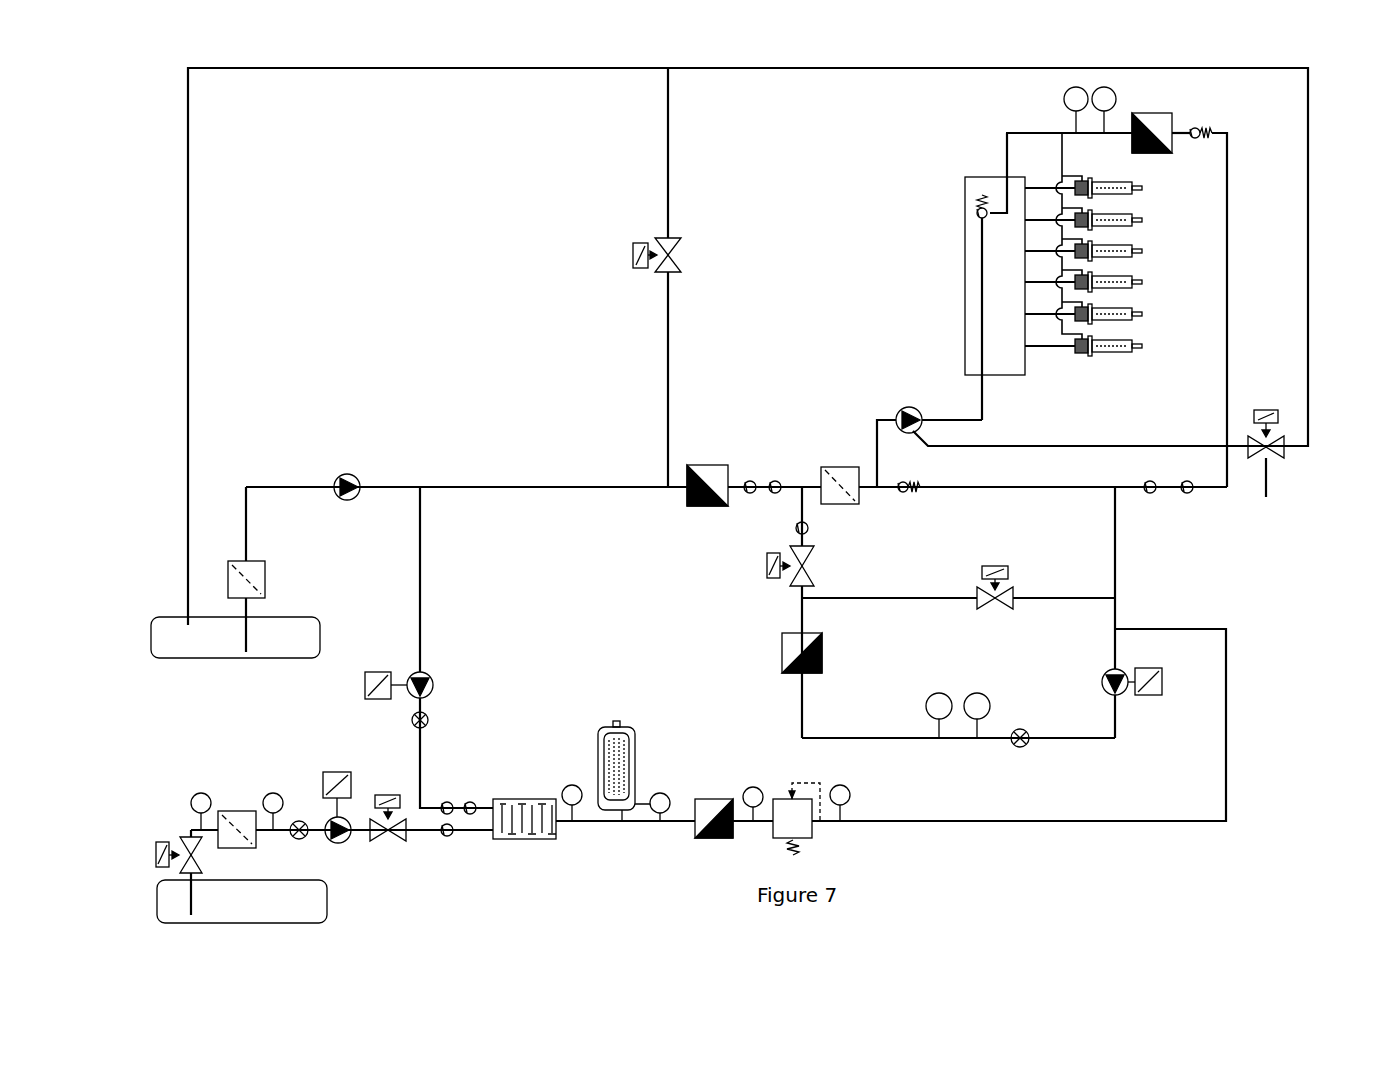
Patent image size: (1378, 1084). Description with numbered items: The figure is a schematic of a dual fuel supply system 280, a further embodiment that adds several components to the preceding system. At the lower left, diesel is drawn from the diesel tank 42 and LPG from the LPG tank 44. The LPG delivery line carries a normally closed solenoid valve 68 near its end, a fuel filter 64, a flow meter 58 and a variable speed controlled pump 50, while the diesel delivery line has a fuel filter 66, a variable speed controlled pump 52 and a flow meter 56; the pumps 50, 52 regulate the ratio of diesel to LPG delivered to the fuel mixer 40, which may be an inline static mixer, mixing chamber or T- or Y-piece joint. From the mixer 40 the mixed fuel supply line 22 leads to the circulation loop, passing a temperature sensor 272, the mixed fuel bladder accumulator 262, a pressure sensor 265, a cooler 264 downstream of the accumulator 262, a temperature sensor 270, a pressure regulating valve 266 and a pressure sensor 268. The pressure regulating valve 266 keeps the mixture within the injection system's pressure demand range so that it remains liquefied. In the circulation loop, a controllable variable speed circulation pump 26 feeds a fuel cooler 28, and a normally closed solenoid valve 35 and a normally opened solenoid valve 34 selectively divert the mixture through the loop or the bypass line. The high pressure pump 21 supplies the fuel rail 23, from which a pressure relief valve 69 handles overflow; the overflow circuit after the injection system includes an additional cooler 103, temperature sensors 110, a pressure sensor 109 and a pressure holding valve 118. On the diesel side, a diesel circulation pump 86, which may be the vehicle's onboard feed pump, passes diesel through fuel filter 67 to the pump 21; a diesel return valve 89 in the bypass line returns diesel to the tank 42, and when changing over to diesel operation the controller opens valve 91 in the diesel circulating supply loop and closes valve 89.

The dual fuel supply system 280 is at (1335, 248).
The temperature sensors 110 is at (1064, 98).
The pressure sensor 109 is at (1114, 95).
The additional cooler 103 is at (1157, 112).
The pressure holding valve 118 is at (1207, 122).
The fuel rail 23 is at (1016, 295).
The pressure relief valve 69 is at (975, 205).
The high pressure pump 21 is at (909, 406).
The valve 91 is at (1266, 466).
The diesel return valve 89 is at (683, 255).
The diesel circulation pump 86 is at (348, 471).
The fuel filter 67 is at (840, 465).
The fuel filter 66 is at (270, 565).
The diesel tank 42 is at (235, 637).
The variable speed controlled pump 52 is at (380, 669).
The flow meter 56 is at (430, 718).
The normally closed solenoid valve 35 is at (766, 565).
The normally opened solenoid valve 34 is at (1012, 564).
The fuel cooler 28 is at (780, 648).
The circulation pump 26 is at (1141, 664).
The mixed fuel supply line 22 is at (1115, 825).
The fuel mixer 40 is at (513, 838).
The temperature sensor 272 is at (573, 785).
The mixed fuel bladder accumulator 262 is at (628, 724).
The pressure sensor 265 is at (660, 815).
The cooler 264 is at (712, 796).
The temperature sensor 270 is at (755, 786).
The pressure regulating valve 266 is at (812, 835).
The pressure sensor 268 is at (850, 790).
The fuel filter 64 is at (245, 808).
The normally closed solenoid valve 68 is at (161, 838).
The flow meter 58 is at (305, 838).
The variable speed controlled pump 50 is at (335, 770).
The LPG tank 44 is at (242, 901).